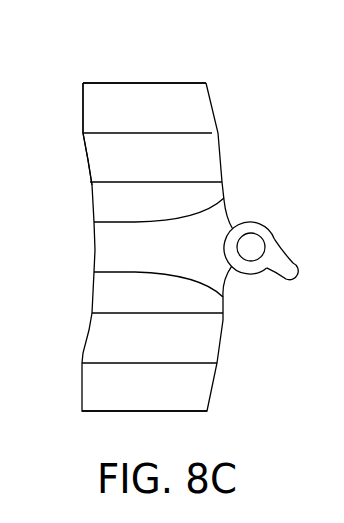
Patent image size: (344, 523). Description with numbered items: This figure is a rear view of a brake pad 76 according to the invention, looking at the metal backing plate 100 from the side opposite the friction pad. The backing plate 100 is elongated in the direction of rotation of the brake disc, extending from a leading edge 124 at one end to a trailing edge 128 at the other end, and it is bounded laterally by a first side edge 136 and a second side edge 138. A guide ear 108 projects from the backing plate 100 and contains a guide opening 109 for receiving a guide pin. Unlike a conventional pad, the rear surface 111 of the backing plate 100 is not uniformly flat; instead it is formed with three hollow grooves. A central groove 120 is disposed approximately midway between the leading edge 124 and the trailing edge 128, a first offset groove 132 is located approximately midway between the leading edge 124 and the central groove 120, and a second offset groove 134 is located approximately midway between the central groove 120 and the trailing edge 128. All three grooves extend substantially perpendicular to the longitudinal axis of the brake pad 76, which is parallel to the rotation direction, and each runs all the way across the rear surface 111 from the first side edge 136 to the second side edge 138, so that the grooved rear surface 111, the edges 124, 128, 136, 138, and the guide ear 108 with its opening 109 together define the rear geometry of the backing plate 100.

The brake pad 76 is at (170, 62).
The metal backing plate 100 is at (95, 82).
The trailing edge 128 is at (153, 82).
The rear surface 111 is at (92, 110).
The second side edge 138 is at (213, 145).
The first side edge 136 is at (88, 160).
The second offset groove 134 is at (185, 162).
The guide ear 108 is at (255, 227).
The guide opening 109 is at (248, 260).
The central groove 120 is at (133, 250).
The first offset groove 132 is at (120, 342).
The leading edge 124 is at (107, 413).